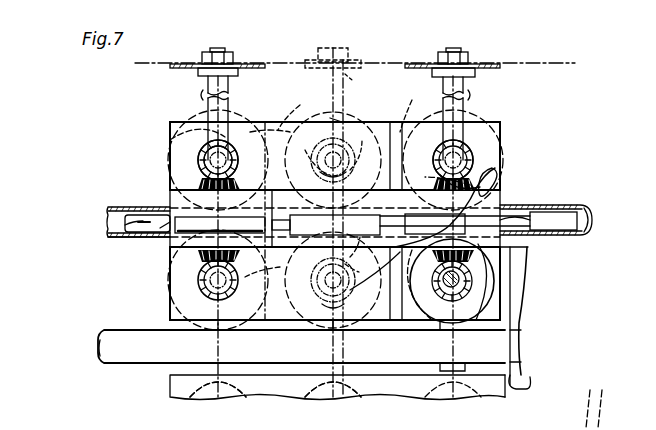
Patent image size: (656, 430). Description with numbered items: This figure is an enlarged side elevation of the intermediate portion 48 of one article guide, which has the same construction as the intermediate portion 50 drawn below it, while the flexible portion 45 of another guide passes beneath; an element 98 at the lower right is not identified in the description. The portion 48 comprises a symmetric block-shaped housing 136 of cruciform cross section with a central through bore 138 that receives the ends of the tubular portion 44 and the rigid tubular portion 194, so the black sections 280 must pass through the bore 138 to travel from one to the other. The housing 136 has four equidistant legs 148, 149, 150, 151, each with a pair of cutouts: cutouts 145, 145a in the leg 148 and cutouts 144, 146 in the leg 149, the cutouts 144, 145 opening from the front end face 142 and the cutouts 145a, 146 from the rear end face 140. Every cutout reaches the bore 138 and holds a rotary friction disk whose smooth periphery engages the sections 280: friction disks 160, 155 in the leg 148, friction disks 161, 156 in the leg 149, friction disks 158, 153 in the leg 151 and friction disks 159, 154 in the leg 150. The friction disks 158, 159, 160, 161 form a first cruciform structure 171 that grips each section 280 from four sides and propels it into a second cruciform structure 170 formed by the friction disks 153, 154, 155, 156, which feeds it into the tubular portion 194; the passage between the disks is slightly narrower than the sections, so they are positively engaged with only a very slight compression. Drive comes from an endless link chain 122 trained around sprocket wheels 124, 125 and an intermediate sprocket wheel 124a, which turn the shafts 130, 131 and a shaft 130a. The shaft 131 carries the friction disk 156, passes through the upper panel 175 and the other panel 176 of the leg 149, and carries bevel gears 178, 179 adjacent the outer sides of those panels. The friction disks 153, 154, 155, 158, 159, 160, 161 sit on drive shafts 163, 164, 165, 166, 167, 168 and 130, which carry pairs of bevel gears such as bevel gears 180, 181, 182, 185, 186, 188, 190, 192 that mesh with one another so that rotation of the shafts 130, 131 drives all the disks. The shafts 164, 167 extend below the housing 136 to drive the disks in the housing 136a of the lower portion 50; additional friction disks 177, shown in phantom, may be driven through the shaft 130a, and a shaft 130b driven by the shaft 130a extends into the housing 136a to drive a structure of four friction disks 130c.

The tubular portion 44 is at (127, 216).
The flexible portion 45 is at (146, 362).
The intermediate portion 48 is at (556, 99).
The intermediate portion 50 is at (508, 399).
The frame member 98 is at (573, 410).
The endless link chain 122 is at (148, 61).
The sprocket wheel 124 is at (250, 62).
The sprocket wheel 124a is at (303, 60).
The sprocket wheel 125 is at (490, 62).
The shaft 130 is at (226, 105).
The shaft 130a is at (345, 106).
The shaft 130b is at (300, 398).
The friction disks 130c is at (355, 398).
The shaft 131 is at (463, 106).
The housing 136 is at (386, 118).
The housing 136a is at (172, 382).
The through bore 138 is at (570, 222).
The rear end face 140 is at (488, 130).
The front end face 142 is at (170, 140).
The cutout 144 is at (170, 198).
The cutout 145 is at (296, 111).
The cutout 145a is at (413, 105).
The cutout 146 is at (367, 252).
The leg 148 is at (333, 166).
The leg 149 is at (310, 184).
The leg 150 is at (478, 183).
The leg 151 is at (334, 306).
The friction disk 153 is at (520, 303).
The friction disk 154 is at (463, 242).
The friction disk 155 is at (463, 177).
The friction disk 156 is at (365, 273).
The friction disk 158 is at (185, 320).
The friction disk 159 is at (164, 229).
The friction disk 160 is at (208, 114).
The friction disk 161 is at (275, 262).
The drive shaft 163 is at (436, 330).
The drive shaft 164 is at (458, 330).
The drive shaft 165 is at (356, 128).
The drive shaft 166 is at (240, 329).
The drive shaft 167 is at (226, 331).
The drive shaft 168 is at (282, 150).
The second cruciform structure 170 is at (533, 233).
The first cruciform structure 171 is at (128, 240).
The upper panel 175 is at (364, 163).
The panel 176 is at (488, 249).
The additional friction disks 177 is at (338, 118).
The bevel gear 178 is at (493, 191).
The bevel gear 179 is at (398, 285).
The bevel gear 180 is at (355, 335).
The bevel gear 181 is at (519, 320).
The bevel gear 182 is at (521, 287).
The bevel gear 185 is at (483, 146).
The bevel gear 186 is at (324, 288).
The bevel gear 188 is at (198, 277).
The bevel gear 190 is at (198, 168).
The bevel gear 192 is at (199, 165).
The rigid tubular portion 194 is at (592, 215).
The black section 280 is at (126, 226).